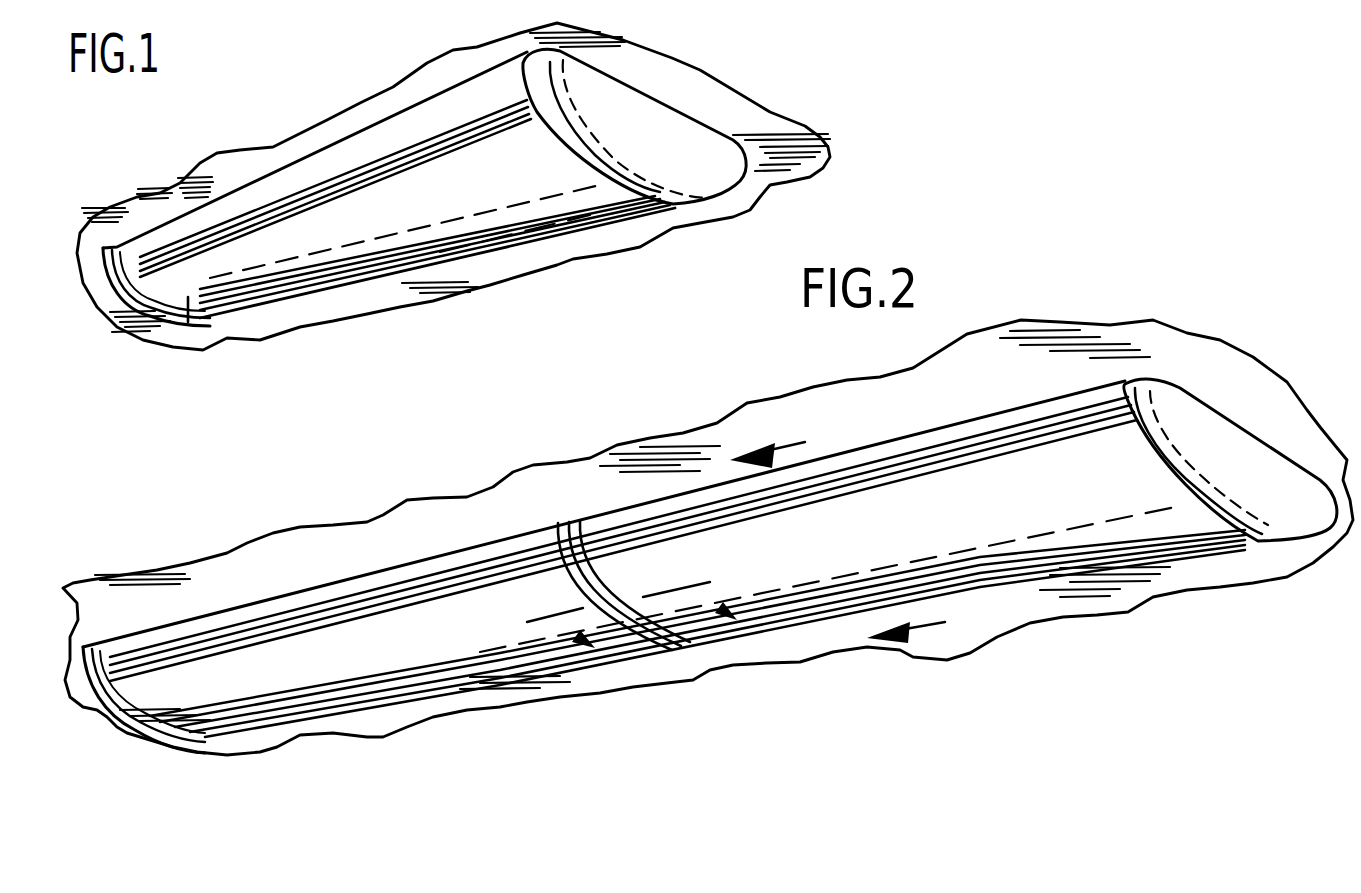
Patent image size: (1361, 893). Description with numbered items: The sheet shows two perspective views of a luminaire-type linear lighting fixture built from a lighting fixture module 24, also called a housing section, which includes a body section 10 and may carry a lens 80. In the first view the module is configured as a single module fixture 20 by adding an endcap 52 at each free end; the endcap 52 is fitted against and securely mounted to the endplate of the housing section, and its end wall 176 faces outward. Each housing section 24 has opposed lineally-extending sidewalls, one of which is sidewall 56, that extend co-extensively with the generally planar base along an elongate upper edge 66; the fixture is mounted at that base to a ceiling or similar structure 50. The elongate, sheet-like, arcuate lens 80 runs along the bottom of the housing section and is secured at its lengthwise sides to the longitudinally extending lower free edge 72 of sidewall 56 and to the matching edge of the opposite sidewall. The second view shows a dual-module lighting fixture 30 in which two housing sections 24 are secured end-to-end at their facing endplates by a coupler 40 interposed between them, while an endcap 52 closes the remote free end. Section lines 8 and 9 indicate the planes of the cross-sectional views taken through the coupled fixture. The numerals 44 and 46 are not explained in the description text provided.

In FIG. 1, the body section 10 is at (510, 253).
In FIG. 1, the single module fixture 20 is at (290, 352).
In FIG. 1, the lighting fixture module 24 is at (148, 223).
In FIG. 2, the lighting fixture module 24 is at (203, 613).
In FIG. 2, the dual-module lighting fixture 30 is at (1080, 303).
In FIG. 2, the coupler 40 is at (627, 645).
In FIG. 1, the lower rail 44 is at (587, 193).
In FIG. 1, the end seam 46 is at (188, 322).
In FIG. 1, the ceiling or similar structure 50 is at (277, 148).
In FIG. 2, the ceiling or similar structure 50 is at (843, 410).
In FIG. 1, the endcap 52 is at (680, 130).
In FIG. 2, the endcap 52 is at (1200, 407).
In FIG. 1, the sidewall 56 is at (372, 143).
In FIG. 2, the sidewall 56 is at (350, 590).
In FIG. 1, the elongate upper edge 66 is at (188, 178).
In FIG. 1, the lower free edge 72 is at (115, 312).
In FIG. 2, the lower free edge 72 is at (263, 640).
In FIG. 1, the lens 80 is at (333, 253).
In FIG. 2, the lens 80 is at (500, 650).
In FIG. 2, the end wall 176 is at (1253, 457).
In FIG. 2, the section line 8- 8 is at (595, 648).
In FIG. 2, the section line 9- 9 is at (817, 487).